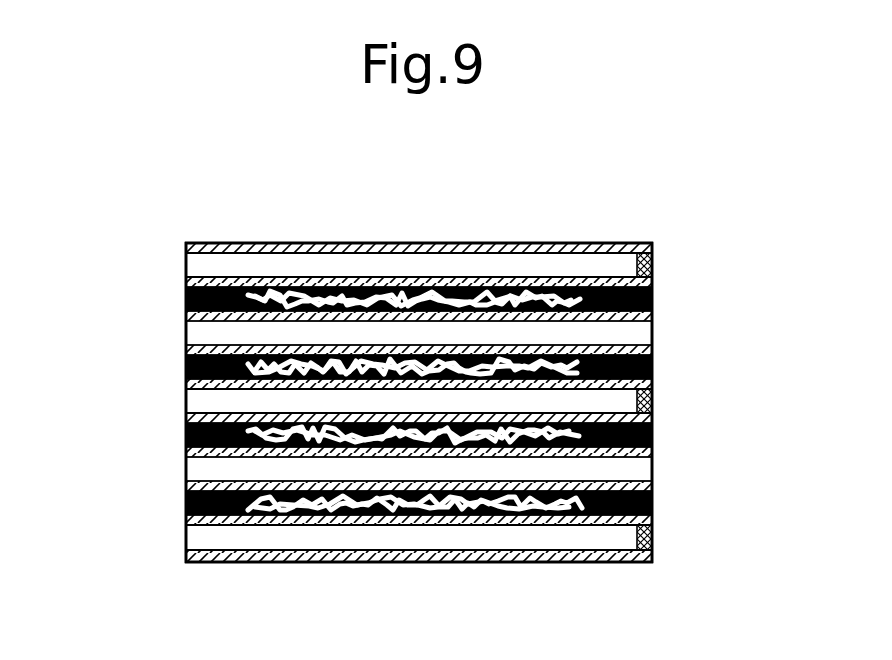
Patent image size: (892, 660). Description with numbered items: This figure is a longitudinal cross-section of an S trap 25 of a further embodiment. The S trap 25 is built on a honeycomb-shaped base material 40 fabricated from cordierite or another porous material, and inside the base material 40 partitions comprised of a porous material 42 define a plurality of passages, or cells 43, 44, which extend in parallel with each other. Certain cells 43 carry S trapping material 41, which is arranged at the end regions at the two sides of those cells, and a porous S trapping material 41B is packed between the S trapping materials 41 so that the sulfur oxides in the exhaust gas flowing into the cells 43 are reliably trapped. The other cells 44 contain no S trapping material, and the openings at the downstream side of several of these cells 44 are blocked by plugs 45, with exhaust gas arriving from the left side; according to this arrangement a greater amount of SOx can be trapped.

The S trap 25 is at (580, 210).
The honeycomb-shaped base material 40 is at (641, 231).
The S trapping material 41 is at (186, 295).
The porous S trapping material 41B is at (357, 352).
The porous material 42 is at (486, 283).
The cells 43 is at (290, 352).
The cells 44 is at (415, 328).
The plugs 45 is at (652, 266).